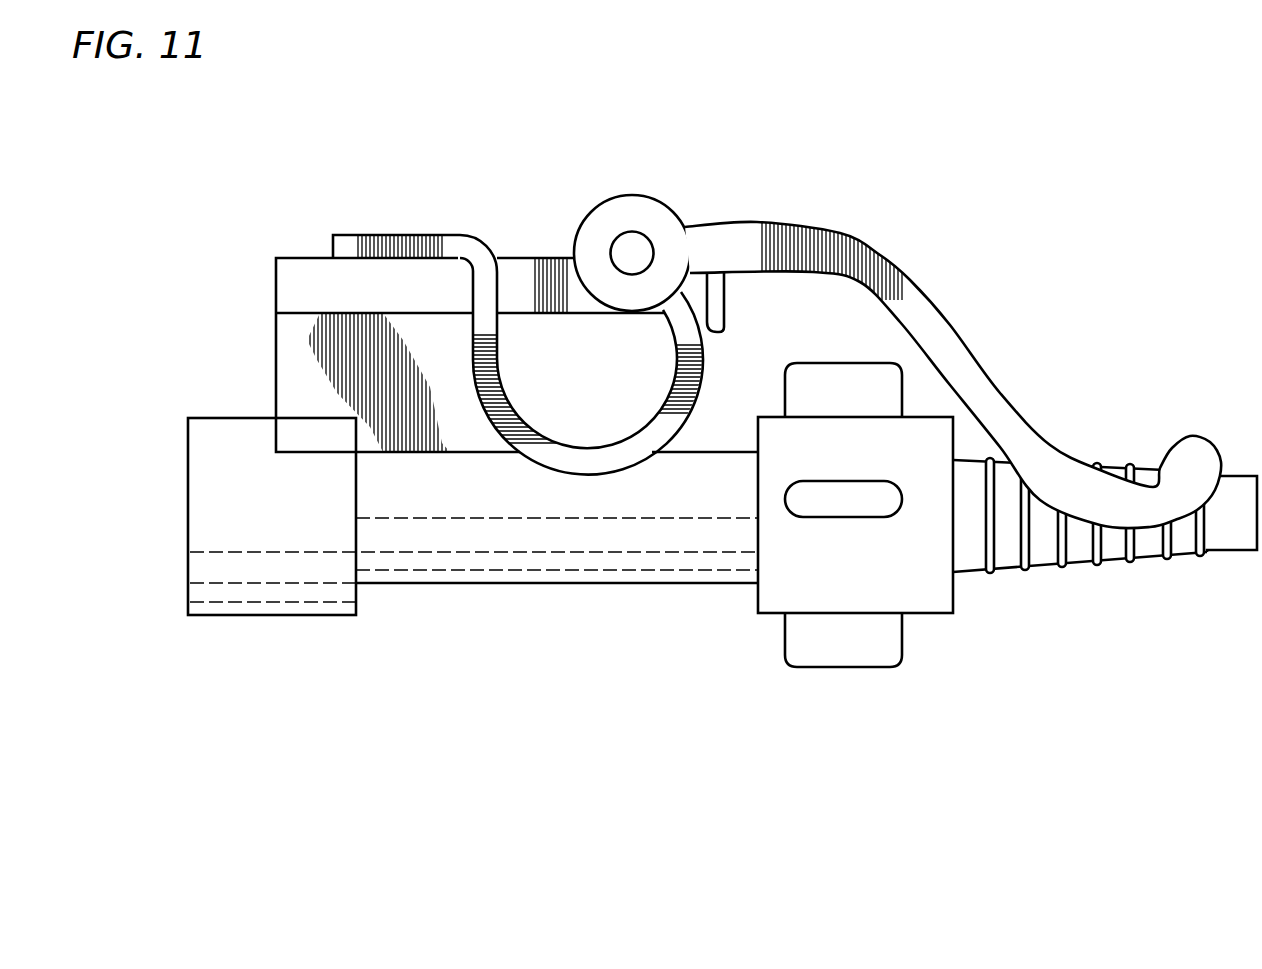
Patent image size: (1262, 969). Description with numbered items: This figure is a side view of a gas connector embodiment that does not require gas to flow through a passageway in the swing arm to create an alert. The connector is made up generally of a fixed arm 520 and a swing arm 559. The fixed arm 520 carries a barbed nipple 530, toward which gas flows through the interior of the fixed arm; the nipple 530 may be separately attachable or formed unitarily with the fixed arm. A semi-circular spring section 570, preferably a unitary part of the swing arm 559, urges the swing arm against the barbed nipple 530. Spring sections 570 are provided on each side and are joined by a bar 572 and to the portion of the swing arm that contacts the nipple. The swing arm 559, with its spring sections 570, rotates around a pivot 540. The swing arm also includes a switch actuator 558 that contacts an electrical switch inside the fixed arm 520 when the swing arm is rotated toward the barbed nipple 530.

The fixed arm 520 is at (310, 372).
The barbed nipple 530 is at (1112, 560).
The pivot 540 is at (632, 253).
The switch actuator 558 is at (723, 297).
The swing arm 559 is at (865, 262).
The semi-circular spring section 570 is at (487, 301).
The bar 572 is at (415, 235).